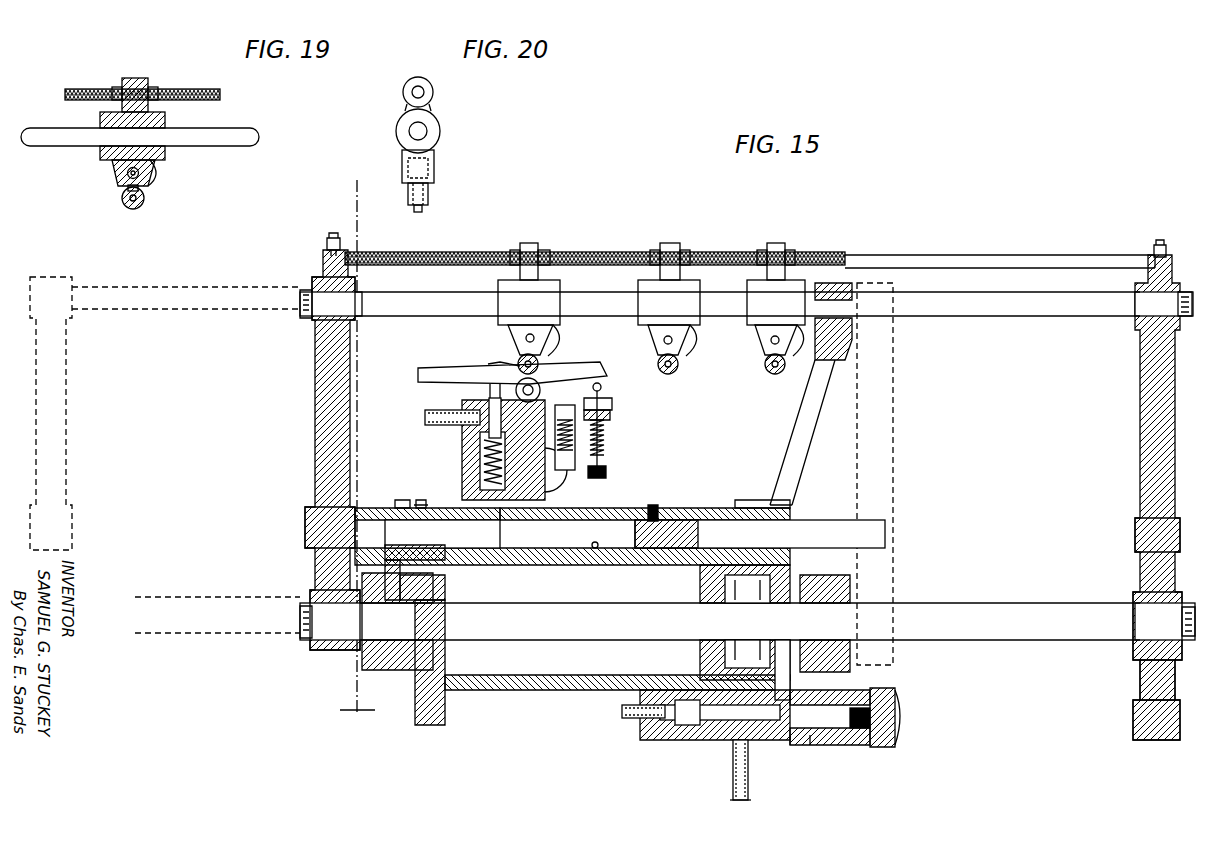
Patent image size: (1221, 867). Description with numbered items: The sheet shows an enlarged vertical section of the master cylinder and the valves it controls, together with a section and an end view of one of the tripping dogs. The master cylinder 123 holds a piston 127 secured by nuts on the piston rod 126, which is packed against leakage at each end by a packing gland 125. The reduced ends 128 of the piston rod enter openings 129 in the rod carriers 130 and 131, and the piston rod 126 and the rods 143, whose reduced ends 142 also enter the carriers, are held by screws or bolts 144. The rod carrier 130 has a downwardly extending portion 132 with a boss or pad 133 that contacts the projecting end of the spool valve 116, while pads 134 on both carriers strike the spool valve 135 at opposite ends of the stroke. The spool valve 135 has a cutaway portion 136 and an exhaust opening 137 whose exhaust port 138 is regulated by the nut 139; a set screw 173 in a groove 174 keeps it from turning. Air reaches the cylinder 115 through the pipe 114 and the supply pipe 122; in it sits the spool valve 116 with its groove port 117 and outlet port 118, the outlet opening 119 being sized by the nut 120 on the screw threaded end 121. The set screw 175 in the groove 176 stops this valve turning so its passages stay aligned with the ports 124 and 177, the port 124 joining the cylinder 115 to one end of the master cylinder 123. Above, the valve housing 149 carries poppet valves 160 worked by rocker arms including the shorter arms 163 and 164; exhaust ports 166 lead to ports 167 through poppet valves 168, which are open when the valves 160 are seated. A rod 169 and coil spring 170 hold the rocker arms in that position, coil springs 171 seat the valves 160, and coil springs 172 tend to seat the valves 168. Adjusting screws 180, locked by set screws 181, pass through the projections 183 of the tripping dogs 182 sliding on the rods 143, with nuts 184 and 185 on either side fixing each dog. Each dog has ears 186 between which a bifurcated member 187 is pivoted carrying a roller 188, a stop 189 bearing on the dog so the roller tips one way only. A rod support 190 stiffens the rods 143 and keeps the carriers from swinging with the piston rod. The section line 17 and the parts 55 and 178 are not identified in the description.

In FIG. 15, the section line 17 is at (357, 453).
In FIG. 15, the tube 55 is at (445, 418).
In FIG. 15, the pipe 114 is at (622, 712).
In FIG. 15, the cylinder 115 is at (676, 722).
In FIG. 15, the spool valve 116 is at (700, 741).
In FIG. 15, the groove port 117 is at (749, 760).
In FIG. 15, the outlet port 118 is at (880, 746).
In FIG. 15, the outlet opening 119 is at (832, 732).
In FIG. 15, the nut 120 is at (880, 742).
In FIG. 15, the screw threaded end 121 is at (900, 698).
In FIG. 15, the supply pipe 122 is at (738, 796).
In FIG. 15, the master cylinder 123 is at (595, 676).
In FIG. 15, the port 124 is at (790, 684).
In FIG. 15, the packing gland 125 is at (395, 668).
In FIG. 15, the piston rod 126 is at (747, 621).
In FIG. 15, the piston 127 is at (712, 570).
In FIG. 15, the reduced ends 128 is at (322, 645).
In FIG. 15, the openings 129 is at (318, 598).
In FIG. 15, the rod carrier 130 is at (1143, 441).
In FIG. 15, the rod carrier 131 is at (316, 402).
In FIG. 15, the downwardly extending portion 132 is at (1141, 690).
In FIG. 15, the boss or pad 133 is at (1153, 742).
In FIG. 15, the pads 134 is at (306, 528).
In FIG. 15, the spool valve 135 is at (834, 538).
In FIG. 15, the cutaway portion 136 is at (492, 548).
In FIG. 15, the exhaust opening 137 is at (402, 500).
In FIG. 15, the exhaust port 138 is at (414, 505).
In FIG. 15, the nut 139 is at (350, 510).
In FIG. 15, the reduced ends 142 is at (312, 300).
In FIG. 19, the rods 143 is at (258, 130).
In FIG. 15, the rods 143 is at (995, 305).
In FIG. 15, the screws or bolts 144 is at (318, 292).
In FIG. 15, the valve housing 149 is at (535, 450).
In FIG. 15, the poppet valves 160 is at (470, 437).
In FIG. 15, the rocker arm 163 is at (500, 372).
In FIG. 15, the rocker arm 164 is at (450, 372).
In FIG. 15, the exhaust ports 166 is at (553, 388).
In FIG. 15, the ports 167 is at (612, 401).
In FIG. 15, the poppet valves 168 is at (610, 418).
In FIG. 15, the rod 169 is at (607, 473).
In FIG. 15, the coil spring 170 is at (606, 443).
In FIG. 15, the coil springs 171 is at (480, 470).
In FIG. 15, the coil springs 172 is at (566, 472).
In FIG. 15, the set screw 173 is at (660, 510).
In FIG. 15, the groove 174 is at (748, 508).
In FIG. 15, the set screw 175 is at (795, 745).
In FIG. 15, the groove 176 is at (815, 735).
In FIG. 15, the port 177 is at (430, 568).
In FIG. 15, the pin 178 is at (595, 550).
In FIG. 15, the adjusting screws 180 is at (915, 249).
In FIG. 15, the set screws 181 is at (340, 229).
In FIG. 19, the tripping dogs 182 is at (166, 118).
In FIG. 20, the tripping dogs 182 is at (440, 134).
In FIG. 15, the tripping dogs 182 is at (750, 290).
In FIG. 19, the projections 183 is at (136, 80).
In FIG. 20, the projections 183 is at (434, 92).
In FIG. 15, the projections 183 is at (530, 243).
In FIG. 19, the nut 184 is at (120, 86).
In FIG. 15, the nut 184 is at (512, 250).
In FIG. 19, the nut 185 is at (150, 86).
In FIG. 15, the nut 185 is at (548, 250).
In FIG. 19, the ears 186 is at (116, 164).
In FIG. 20, the ears 186 is at (436, 162).
In FIG. 15, the ears 186 is at (790, 331).
In FIG. 19, the bifurcated member 187 is at (127, 174).
In FIG. 20, the bifurcated member 187 is at (410, 188).
In FIG. 15, the bifurcated member 187 is at (536, 340).
In FIG. 19, the roller 188 is at (134, 209).
In FIG. 20, the roller 188 is at (418, 213).
In FIG. 15, the roller 188 is at (679, 366).
In FIG. 19, the stop 189 is at (152, 170).
In FIG. 15, the stop 189 is at (556, 332).
In FIG. 15, the rod support 190 is at (815, 434).